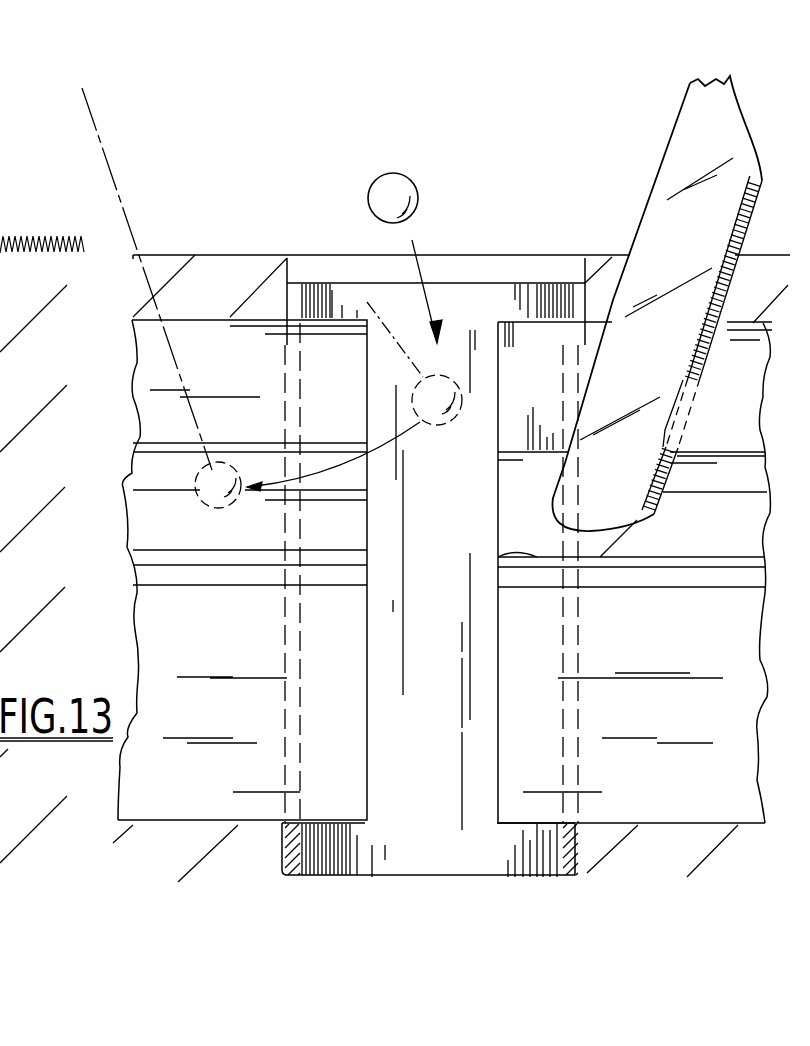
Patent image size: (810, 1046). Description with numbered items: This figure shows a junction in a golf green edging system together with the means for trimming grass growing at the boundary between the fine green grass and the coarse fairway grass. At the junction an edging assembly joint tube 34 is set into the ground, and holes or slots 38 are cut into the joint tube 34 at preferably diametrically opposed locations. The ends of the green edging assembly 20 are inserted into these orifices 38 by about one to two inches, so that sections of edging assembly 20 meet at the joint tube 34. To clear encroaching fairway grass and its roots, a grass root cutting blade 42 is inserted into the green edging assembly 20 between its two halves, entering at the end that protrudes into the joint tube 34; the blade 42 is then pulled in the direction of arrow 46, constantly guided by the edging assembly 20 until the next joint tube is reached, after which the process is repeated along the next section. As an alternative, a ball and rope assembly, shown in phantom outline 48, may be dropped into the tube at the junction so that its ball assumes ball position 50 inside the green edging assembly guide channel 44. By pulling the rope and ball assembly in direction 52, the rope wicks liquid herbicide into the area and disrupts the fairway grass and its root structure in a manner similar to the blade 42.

The green edging assembly 20 is at (251, 717).
The edging assembly joint tube 34 is at (478, 504).
The holes or slots 38 is at (295, 301).
The blade 42 is at (698, 255).
The green edging assembly guide channel 44 is at (183, 520).
The direction of blade movement 46 is at (645, 190).
The phantom outline of ball and rope assembly 48 is at (245, 173).
The ball position 50 is at (328, 405).
The direction of pulling rope and ball assembly 52 is at (103, 185).